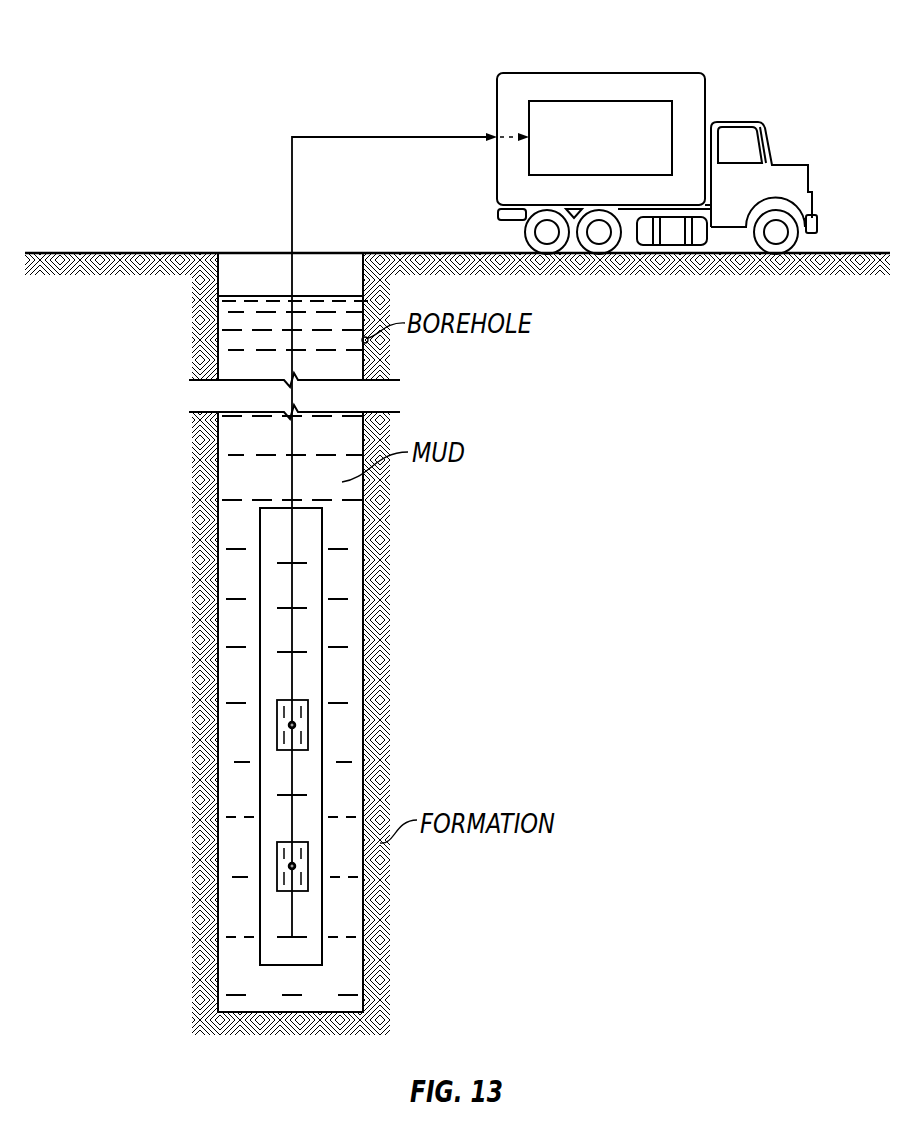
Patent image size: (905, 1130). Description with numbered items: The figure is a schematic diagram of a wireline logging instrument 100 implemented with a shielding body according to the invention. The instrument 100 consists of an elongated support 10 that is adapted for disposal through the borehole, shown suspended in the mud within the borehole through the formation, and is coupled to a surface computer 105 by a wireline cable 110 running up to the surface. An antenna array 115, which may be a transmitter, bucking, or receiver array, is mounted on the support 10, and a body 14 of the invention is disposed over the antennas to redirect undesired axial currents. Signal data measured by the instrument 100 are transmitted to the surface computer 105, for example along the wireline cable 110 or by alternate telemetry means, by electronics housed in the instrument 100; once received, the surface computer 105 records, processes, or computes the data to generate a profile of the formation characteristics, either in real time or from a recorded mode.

The elongated support 10 is at (309, 623).
The body 14 is at (277, 725).
The logging instrument 100 is at (332, 725).
The surface computer 105 is at (565, 92).
The wireline cable 110 is at (292, 205).
The antenna array 115 is at (277, 748).